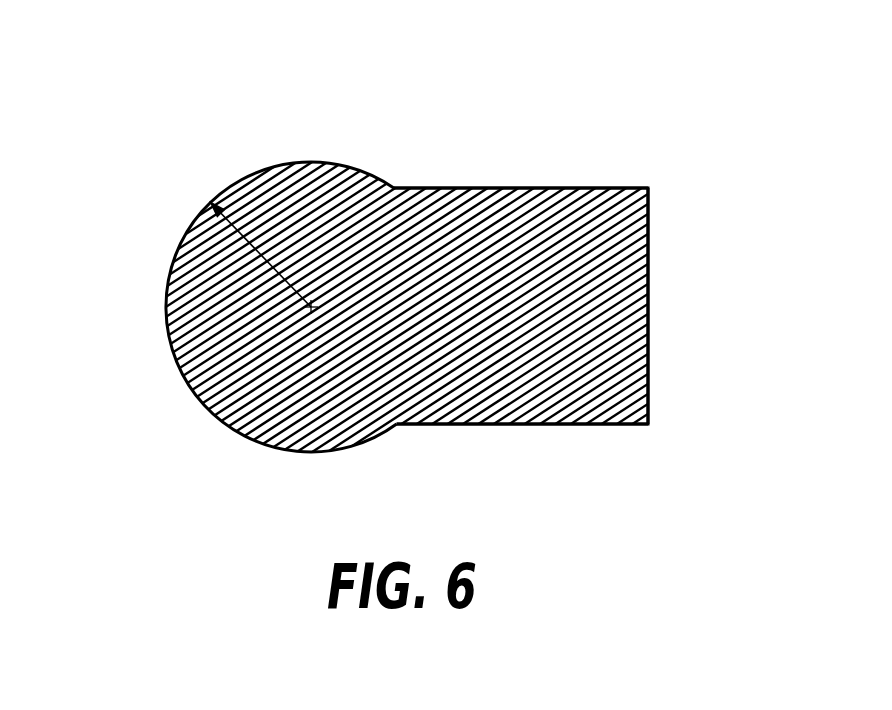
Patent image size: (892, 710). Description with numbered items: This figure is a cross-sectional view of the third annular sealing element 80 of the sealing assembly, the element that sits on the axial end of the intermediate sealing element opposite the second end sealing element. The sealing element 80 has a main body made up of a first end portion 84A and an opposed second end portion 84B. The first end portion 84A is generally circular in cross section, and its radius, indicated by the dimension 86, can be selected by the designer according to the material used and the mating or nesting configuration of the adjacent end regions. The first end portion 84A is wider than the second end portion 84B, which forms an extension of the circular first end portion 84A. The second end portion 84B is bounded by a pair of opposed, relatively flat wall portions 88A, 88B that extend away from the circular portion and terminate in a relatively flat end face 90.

The third annular sealing element 80 is at (578, 130).
The first end portion 84A is at (160, 239).
The second end portion 84B is at (686, 239).
The ball radius 86 is at (302, 225).
The flat wall portion 88A is at (530, 425).
The flat wall portion 88B is at (432, 188).
The end face 90 is at (648, 298).